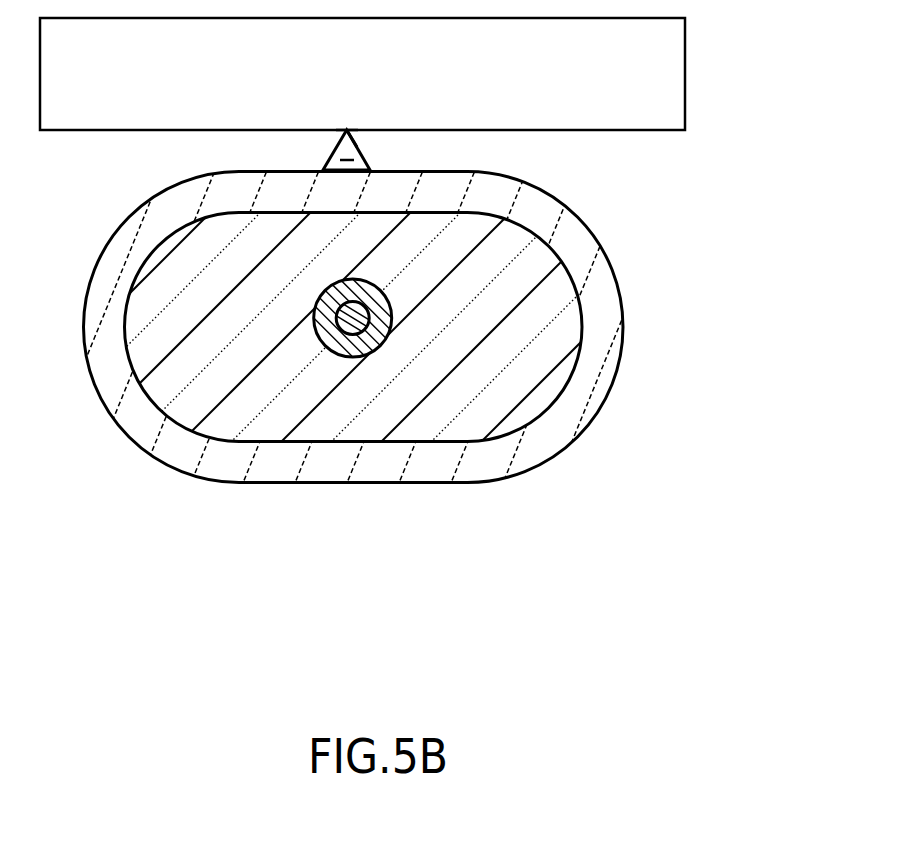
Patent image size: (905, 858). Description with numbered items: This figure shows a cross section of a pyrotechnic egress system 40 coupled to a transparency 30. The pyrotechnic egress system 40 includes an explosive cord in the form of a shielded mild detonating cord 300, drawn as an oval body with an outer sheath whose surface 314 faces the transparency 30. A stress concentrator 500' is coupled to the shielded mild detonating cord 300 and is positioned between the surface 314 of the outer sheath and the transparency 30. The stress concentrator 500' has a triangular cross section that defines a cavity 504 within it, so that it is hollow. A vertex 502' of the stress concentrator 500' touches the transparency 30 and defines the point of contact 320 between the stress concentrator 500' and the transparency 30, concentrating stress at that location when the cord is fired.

The transparency 30 is at (580, 77).
The pyrotechnic egress system 40 is at (701, 139).
The shielded mild detonating cord 300 is at (648, 410).
The surface of the outer sheath 314 is at (578, 213).
The point of contact 320 is at (347, 130).
The stress concentrator 500' is at (394, 150).
The vertex 502' is at (397, 124).
The cavity 504 is at (347, 160).